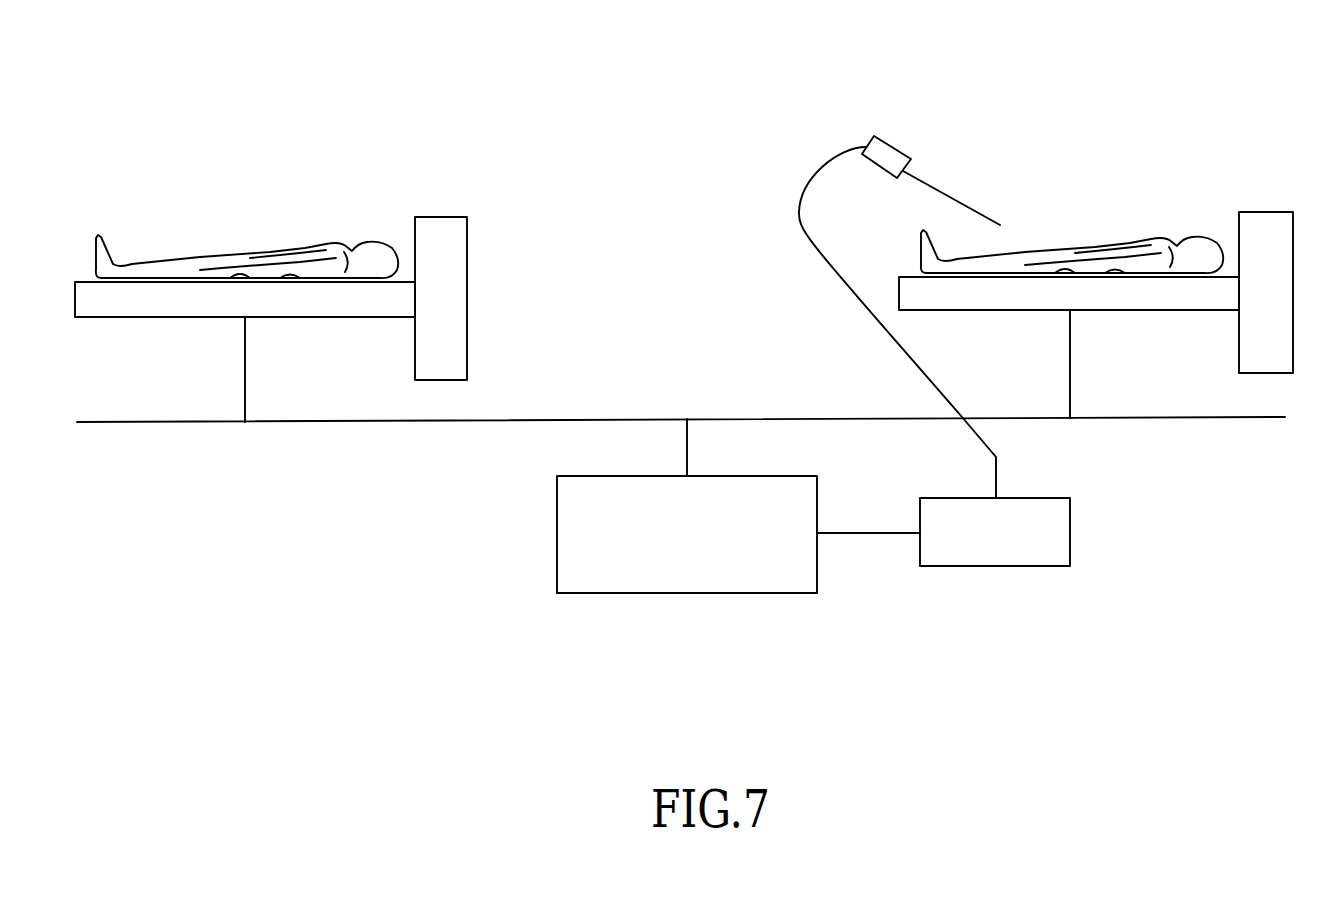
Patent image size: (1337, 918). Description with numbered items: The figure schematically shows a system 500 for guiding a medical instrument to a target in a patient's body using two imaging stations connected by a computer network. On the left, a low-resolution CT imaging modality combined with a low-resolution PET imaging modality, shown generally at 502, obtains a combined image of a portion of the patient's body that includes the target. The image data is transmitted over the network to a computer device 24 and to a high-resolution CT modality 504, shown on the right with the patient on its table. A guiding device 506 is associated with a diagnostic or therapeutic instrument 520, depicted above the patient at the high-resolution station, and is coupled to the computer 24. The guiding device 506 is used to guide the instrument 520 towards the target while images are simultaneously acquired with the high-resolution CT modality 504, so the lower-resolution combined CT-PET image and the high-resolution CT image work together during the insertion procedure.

The system 500 is at (363, 100).
The low-resolution CT and PET imaging modality 502 is at (487, 305).
The high-resolution CT modality 504 is at (1203, 167).
The guiding device 506 is at (758, 355).
The diagnostic or therapeutic instrument 520 is at (950, 192).
The computer device 24 is at (557, 518).